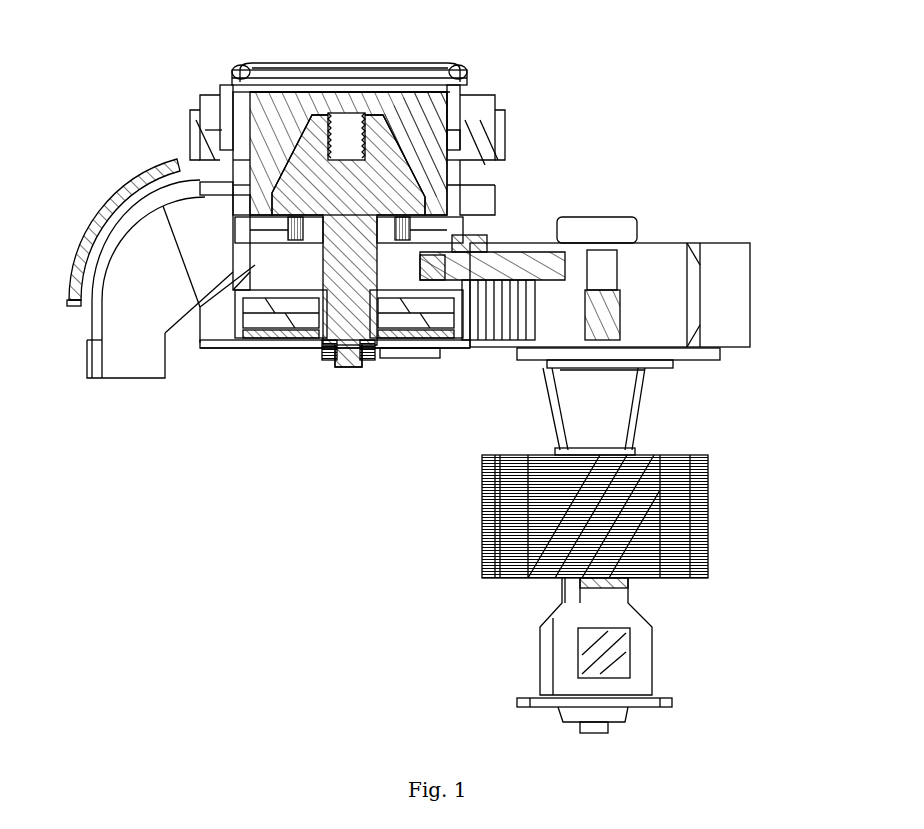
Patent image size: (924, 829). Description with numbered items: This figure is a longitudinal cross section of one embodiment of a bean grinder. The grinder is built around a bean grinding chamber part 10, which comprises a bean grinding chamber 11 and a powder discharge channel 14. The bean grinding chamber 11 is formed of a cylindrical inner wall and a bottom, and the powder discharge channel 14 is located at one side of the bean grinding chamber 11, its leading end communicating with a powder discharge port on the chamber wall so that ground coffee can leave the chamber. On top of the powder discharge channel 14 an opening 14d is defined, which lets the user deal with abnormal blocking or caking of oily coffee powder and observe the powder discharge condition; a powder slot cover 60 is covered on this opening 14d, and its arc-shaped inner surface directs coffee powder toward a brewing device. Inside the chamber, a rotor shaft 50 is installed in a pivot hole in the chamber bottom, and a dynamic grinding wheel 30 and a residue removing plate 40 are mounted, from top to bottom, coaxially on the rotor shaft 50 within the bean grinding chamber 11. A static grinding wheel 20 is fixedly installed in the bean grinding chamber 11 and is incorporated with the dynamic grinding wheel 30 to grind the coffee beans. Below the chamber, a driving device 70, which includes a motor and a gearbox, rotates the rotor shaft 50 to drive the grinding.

The bean grinding chamber part 10 is at (585, 311).
The bean grinding chamber 11 is at (266, 145).
The powder discharge channel 14 is at (138, 292).
The opening 14d is at (113, 279).
The static grinding wheel 20 is at (247, 81).
The dynamic grinding wheel 30 is at (517, 129).
The residue removing plate 40 is at (175, 208).
The rotor shaft 50 is at (509, 193).
The powder slot cover 60 is at (101, 232).
The driving device 70 is at (663, 508).